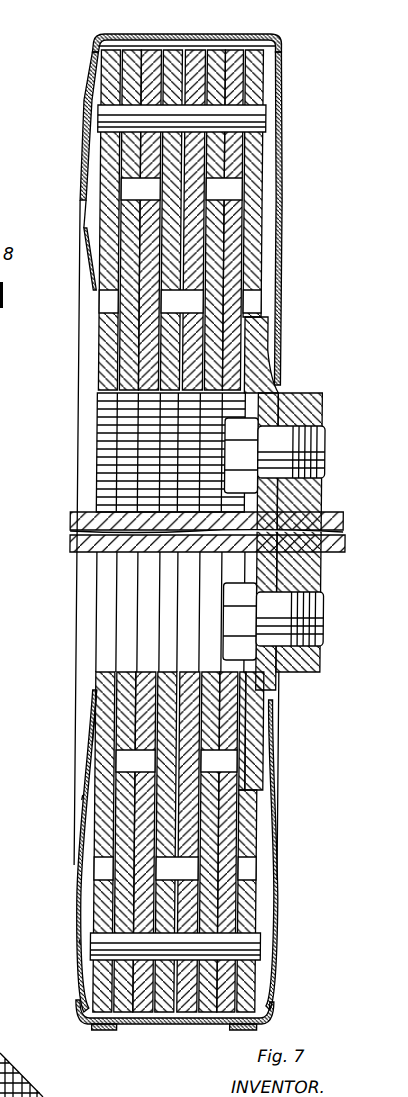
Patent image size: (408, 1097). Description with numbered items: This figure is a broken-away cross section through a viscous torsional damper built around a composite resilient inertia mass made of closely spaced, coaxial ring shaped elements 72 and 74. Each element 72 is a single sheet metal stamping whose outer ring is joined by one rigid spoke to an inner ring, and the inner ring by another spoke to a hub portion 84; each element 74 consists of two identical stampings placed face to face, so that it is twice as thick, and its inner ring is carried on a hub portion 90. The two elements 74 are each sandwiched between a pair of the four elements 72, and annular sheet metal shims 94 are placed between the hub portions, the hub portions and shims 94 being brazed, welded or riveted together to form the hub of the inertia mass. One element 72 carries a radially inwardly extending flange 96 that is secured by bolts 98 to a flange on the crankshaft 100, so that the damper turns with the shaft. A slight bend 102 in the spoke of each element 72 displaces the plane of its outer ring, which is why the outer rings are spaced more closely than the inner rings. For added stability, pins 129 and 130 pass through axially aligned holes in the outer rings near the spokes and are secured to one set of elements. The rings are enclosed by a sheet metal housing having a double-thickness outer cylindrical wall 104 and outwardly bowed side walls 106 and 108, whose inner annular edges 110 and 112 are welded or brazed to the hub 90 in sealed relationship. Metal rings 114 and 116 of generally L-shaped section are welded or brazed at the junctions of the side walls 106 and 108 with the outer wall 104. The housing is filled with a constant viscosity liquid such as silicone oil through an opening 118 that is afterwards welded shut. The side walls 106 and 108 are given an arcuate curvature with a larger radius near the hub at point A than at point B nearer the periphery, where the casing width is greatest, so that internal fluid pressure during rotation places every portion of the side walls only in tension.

The ring shaped element 72 is at (117, 58).
The ring shaped element 74 is at (132, 85).
The pin 130 is at (254, 118).
The bend in spoke 102 is at (257, 194).
The opening 118 is at (84, 264).
The hub portion 90 is at (130, 370).
The hub portion 84 is at (259, 342).
The radially inwardly extending flange 96 is at (273, 500).
The bolts 98 is at (306, 430).
The crankshaft 100 is at (72, 537).
The annular sheet metal shims 94 is at (165, 717).
The inner annular edge 112 is at (269, 747).
The pin 129 is at (258, 945).
The side wall 106 is at (85, 850).
The side wall 108 is at (285, 885).
The inner annular edge 110 is at (98, 745).
The point adjacent the hub A is at (89, 795).
The point of greatest casing width B is at (88, 940).
The outer cylindrical wall 104 is at (182, 1022).
The metal ring 114 is at (92, 1018).
The metal ring 116 is at (280, 1018).